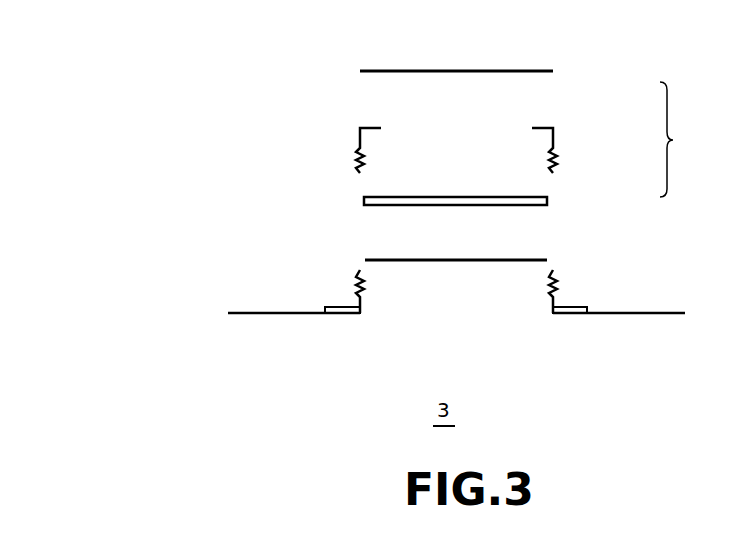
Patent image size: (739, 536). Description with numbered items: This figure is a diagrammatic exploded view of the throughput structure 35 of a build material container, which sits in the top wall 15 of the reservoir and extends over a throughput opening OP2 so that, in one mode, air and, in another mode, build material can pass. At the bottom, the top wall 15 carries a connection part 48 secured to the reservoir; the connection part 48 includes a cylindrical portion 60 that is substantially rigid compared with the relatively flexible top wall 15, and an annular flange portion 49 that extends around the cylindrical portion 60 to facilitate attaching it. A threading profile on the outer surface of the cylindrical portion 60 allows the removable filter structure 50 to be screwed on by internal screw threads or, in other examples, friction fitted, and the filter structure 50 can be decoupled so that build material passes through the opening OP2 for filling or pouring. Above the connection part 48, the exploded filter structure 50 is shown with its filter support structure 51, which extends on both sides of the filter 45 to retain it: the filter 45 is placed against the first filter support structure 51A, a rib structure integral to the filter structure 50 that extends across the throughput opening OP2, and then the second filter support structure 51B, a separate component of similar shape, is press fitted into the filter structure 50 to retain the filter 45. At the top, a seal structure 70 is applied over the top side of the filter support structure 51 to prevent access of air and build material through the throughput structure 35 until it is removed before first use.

The seal structure 70 is at (558, 63).
The filter support structure 51 is at (682, 139).
The first filter support structure 51A is at (547, 125).
The second filter support structure 51B is at (532, 259).
The filter structure 50 is at (344, 157).
The filter 45 is at (367, 200).
The top wall 15 is at (267, 312).
The cylindrical portion 60 is at (376, 288).
The annular flange portion 49 is at (347, 310).
The throughput structure 35 is at (604, 292).
The connection part 48 is at (560, 301).
The throughput opening OP2 is at (492, 310).